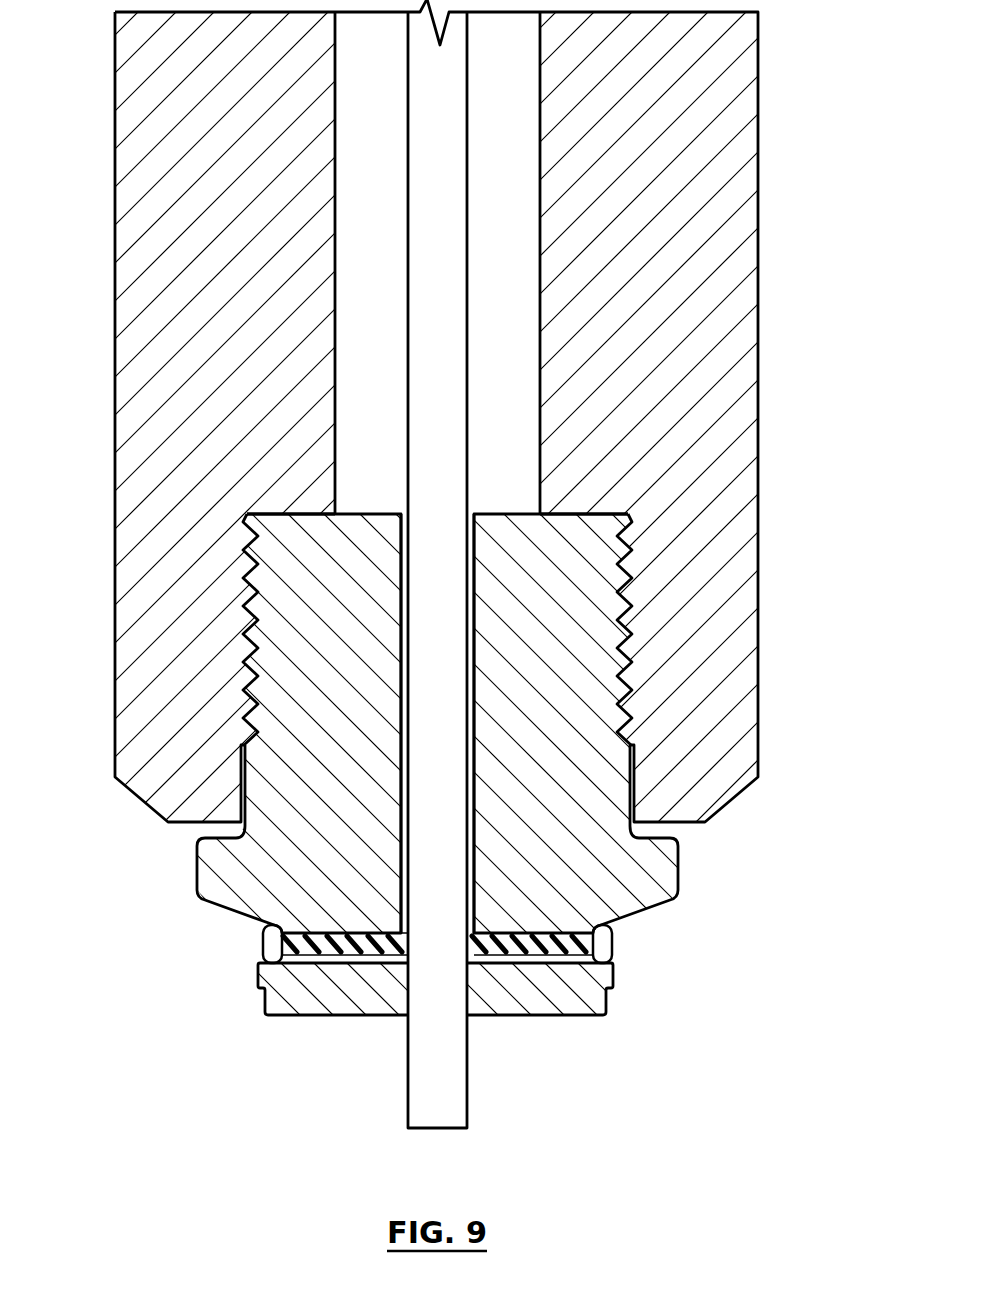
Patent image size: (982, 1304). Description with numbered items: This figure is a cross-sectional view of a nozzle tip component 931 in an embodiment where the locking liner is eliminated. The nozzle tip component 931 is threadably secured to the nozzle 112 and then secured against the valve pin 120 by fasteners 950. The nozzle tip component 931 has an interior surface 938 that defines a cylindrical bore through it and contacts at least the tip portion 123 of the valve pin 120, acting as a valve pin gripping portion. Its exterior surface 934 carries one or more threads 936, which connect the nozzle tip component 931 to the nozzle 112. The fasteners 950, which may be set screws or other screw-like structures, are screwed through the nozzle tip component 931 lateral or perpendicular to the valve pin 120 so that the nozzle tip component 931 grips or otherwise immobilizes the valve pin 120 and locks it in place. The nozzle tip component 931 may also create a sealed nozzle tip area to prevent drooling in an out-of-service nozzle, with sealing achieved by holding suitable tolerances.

The nozzle 112 is at (710, 250).
The valve pin 120 is at (447, 470).
The tip portion 123 is at (407, 1087).
The exterior surface 934 is at (197, 867).
The threads 936 is at (258, 682).
The interior surface 938 is at (472, 648).
The fasteners 950 is at (648, 960).
The nozzle tip component 931 is at (530, 1036).